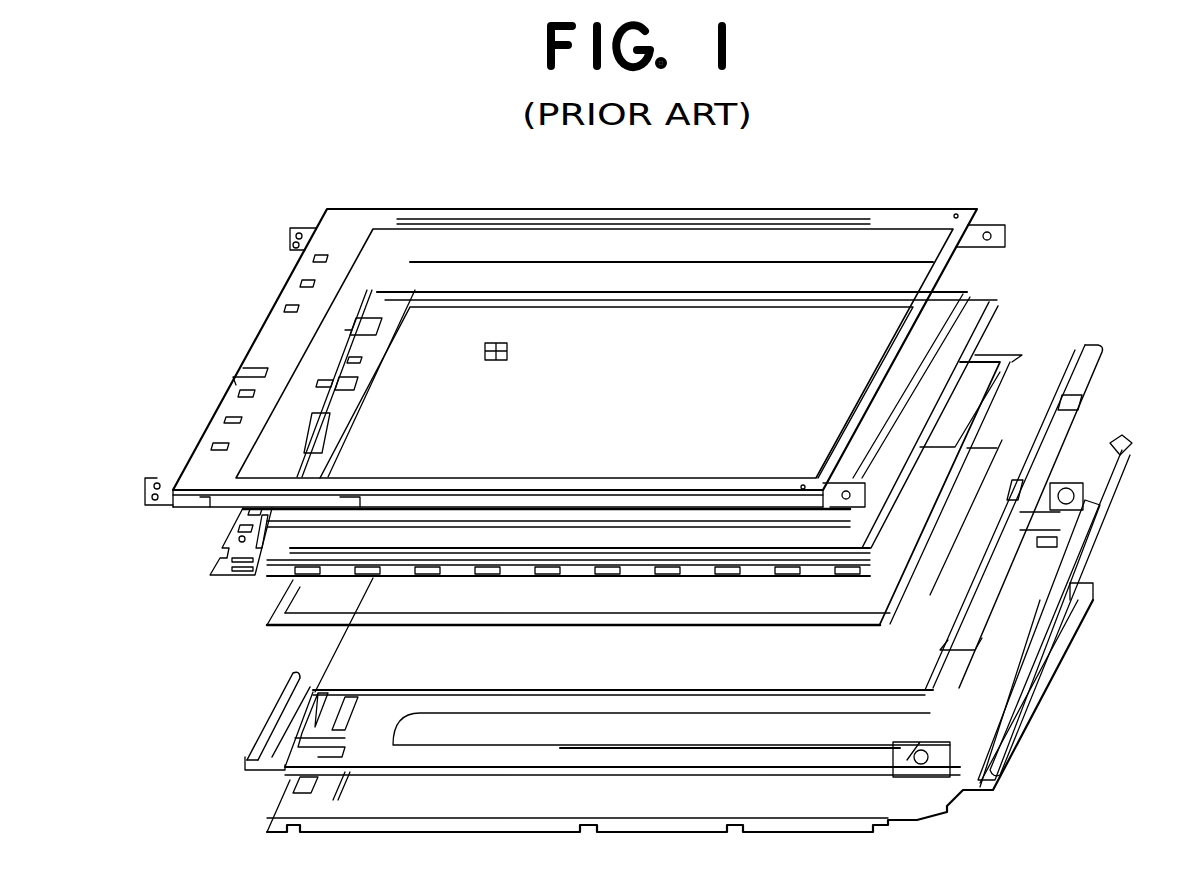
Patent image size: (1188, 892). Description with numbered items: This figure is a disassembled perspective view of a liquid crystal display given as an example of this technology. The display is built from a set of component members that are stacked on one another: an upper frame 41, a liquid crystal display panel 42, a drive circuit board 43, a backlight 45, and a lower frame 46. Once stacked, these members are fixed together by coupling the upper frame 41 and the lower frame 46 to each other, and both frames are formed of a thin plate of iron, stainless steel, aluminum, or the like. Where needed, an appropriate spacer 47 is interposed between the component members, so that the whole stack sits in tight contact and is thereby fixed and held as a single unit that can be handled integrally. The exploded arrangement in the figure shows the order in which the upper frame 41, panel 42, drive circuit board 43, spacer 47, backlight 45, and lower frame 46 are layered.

The upper frame 41 is at (808, 209).
The liquid crystal display panel 42 is at (967, 293).
The drive circuit board 43 is at (990, 322).
The backlight 45 is at (1100, 465).
The lower frame 46 is at (267, 806).
The spacer 47 is at (267, 620).